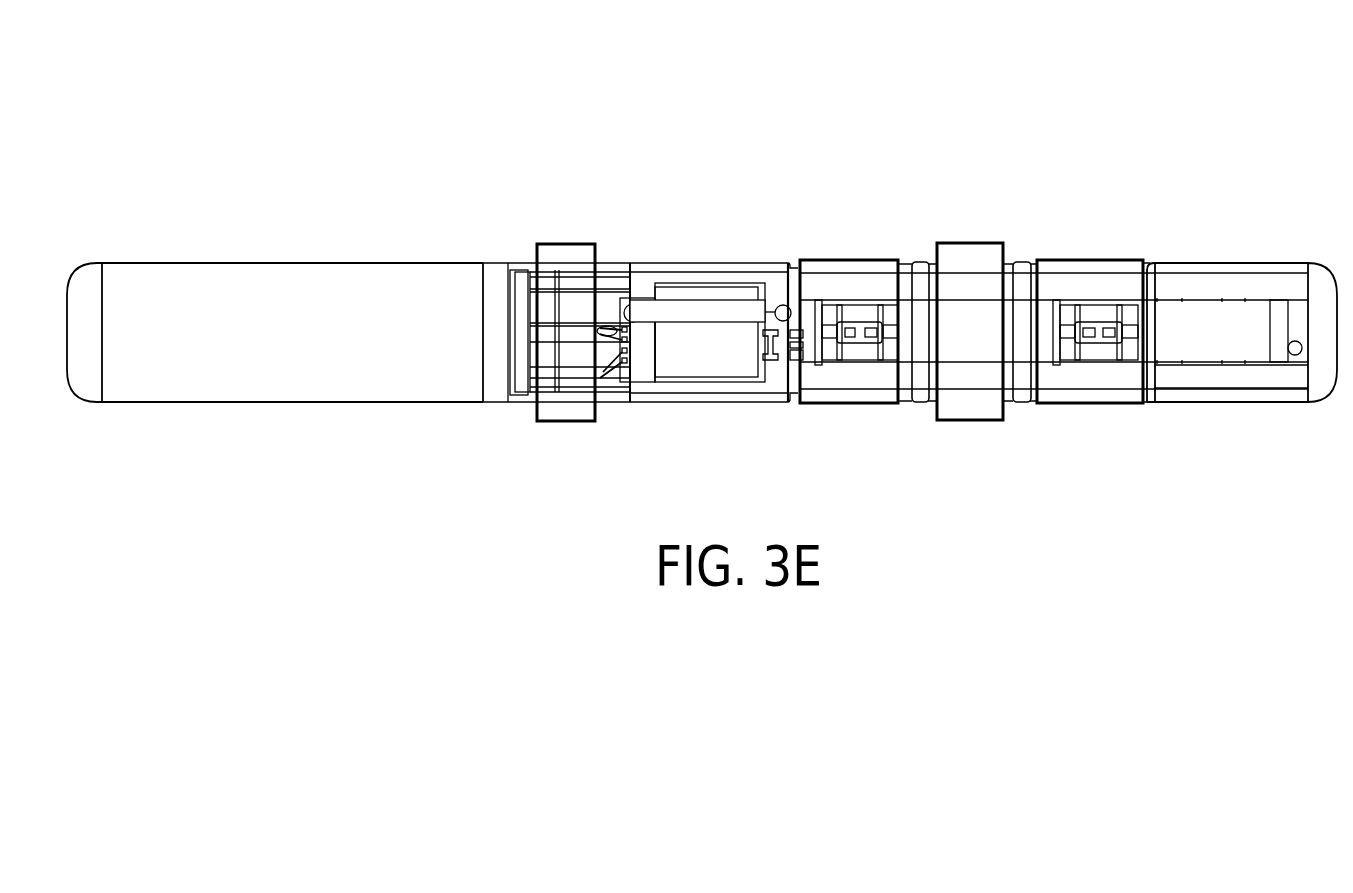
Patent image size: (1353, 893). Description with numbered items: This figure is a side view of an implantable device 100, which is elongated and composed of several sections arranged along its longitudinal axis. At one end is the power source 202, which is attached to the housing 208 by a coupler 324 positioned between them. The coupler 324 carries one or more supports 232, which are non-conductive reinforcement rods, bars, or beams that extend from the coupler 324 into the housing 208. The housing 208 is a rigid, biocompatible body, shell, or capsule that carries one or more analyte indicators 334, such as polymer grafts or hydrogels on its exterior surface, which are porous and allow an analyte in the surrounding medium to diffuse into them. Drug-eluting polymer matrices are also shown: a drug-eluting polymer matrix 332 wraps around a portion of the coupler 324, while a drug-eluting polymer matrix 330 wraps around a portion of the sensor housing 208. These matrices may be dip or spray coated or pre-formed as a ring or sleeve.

The implantable device 100 is at (372, 108).
The power source 202 is at (287, 388).
The housing 208 is at (1278, 393).
The supports 232 is at (693, 308).
The coupler 324 is at (613, 262).
The drug-eluting polymer matrix 330 is at (963, 243).
The drug-eluting polymer matrix 332 is at (553, 243).
The analyte indicators 334 is at (843, 260).